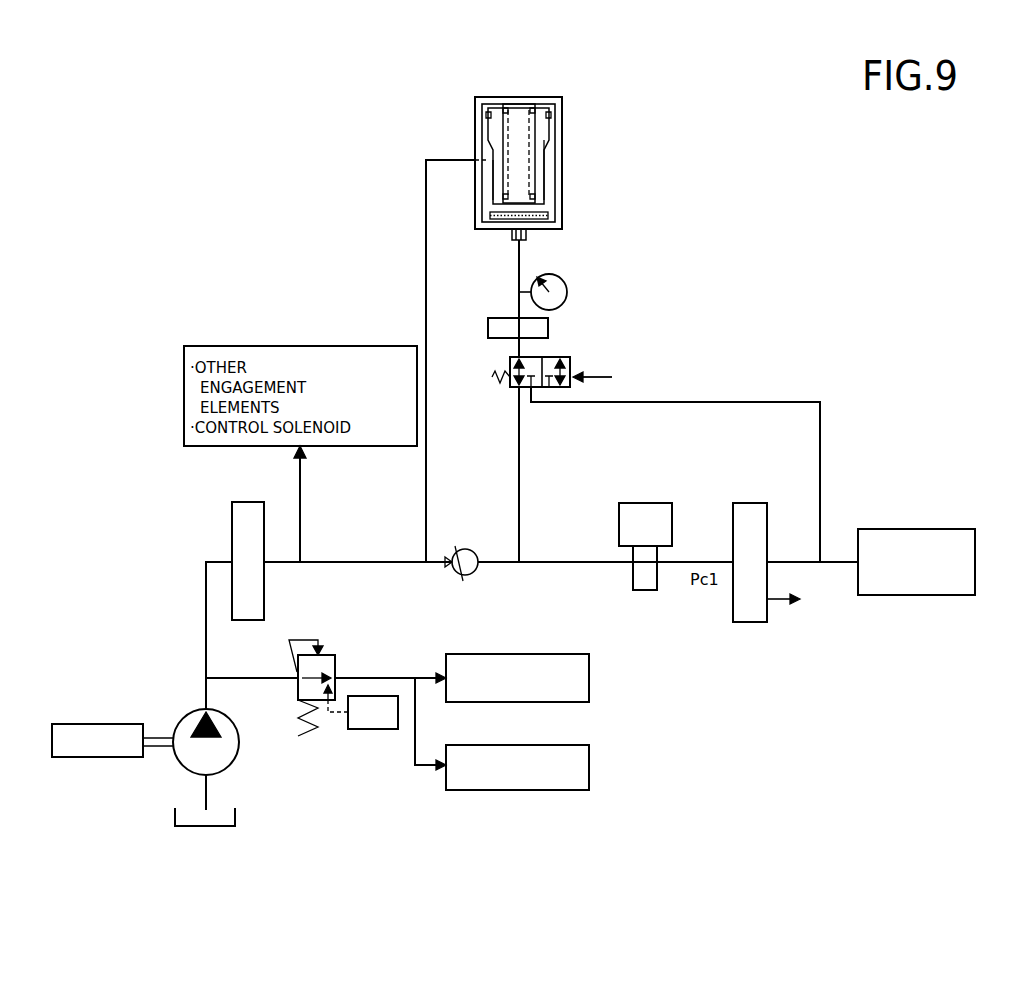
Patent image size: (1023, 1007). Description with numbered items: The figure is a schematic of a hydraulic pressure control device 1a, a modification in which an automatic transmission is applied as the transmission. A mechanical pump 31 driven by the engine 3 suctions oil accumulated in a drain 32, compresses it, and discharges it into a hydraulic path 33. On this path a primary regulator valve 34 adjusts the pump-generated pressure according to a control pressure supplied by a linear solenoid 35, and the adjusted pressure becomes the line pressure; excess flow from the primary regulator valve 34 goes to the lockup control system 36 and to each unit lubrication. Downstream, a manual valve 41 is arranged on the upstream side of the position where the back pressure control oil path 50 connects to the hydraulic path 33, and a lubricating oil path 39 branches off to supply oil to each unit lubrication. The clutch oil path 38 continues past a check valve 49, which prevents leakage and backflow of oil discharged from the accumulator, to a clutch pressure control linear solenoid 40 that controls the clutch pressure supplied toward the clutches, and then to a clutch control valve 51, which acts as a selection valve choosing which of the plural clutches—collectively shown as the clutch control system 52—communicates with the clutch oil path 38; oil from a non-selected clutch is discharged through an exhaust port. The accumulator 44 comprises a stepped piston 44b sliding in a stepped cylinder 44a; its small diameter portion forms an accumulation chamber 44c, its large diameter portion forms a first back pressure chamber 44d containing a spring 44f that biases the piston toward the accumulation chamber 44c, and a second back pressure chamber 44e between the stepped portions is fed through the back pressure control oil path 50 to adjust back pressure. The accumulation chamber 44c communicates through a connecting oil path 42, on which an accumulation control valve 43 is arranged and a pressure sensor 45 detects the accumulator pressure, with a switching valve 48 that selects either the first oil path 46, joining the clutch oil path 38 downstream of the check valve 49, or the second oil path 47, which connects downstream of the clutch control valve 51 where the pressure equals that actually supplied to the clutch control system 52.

The hydraulic pressure control device 1a is at (294, 274).
The engine 3 is at (97, 724).
The mechanical pump 31 is at (237, 723).
The drain 32 is at (235, 818).
The hydraulic path 33 is at (206, 630).
The primary regulator valve 34 is at (330, 654).
The SLS linear solenoid 35 is at (373, 729).
The L/U control system 36 is at (550, 654).
The clutch oil path 38 is at (490, 562).
The lubricating oil path 39 is at (300, 519).
The SLC linear solenoid 40 is at (644, 503).
The manual valve 41 is at (248, 502).
The connecting oil path 42 is at (518, 283).
The accumulation control valve 43 is at (487, 330).
The accumulator 44 is at (551, 92).
The stepped cylinder 44a is at (488, 115).
The stepped piston 44b is at (548, 133).
The accumulation chamber 44c is at (514, 216).
The first back pressure chamber 44d is at (515, 118).
The second back pressure chamber 44e is at (487, 173).
The spring 44f is at (491, 107).
The pressure sensor 45 is at (547, 275).
The first oil path 46 is at (519, 447).
The second oil path 47 is at (716, 402).
The switching valve 48 is at (559, 357).
The check valve 49 is at (469, 549).
The back pressure control oil path 50 is at (426, 287).
The clutch control valve 51 is at (749, 503).
The C1 control system 52 is at (915, 529).